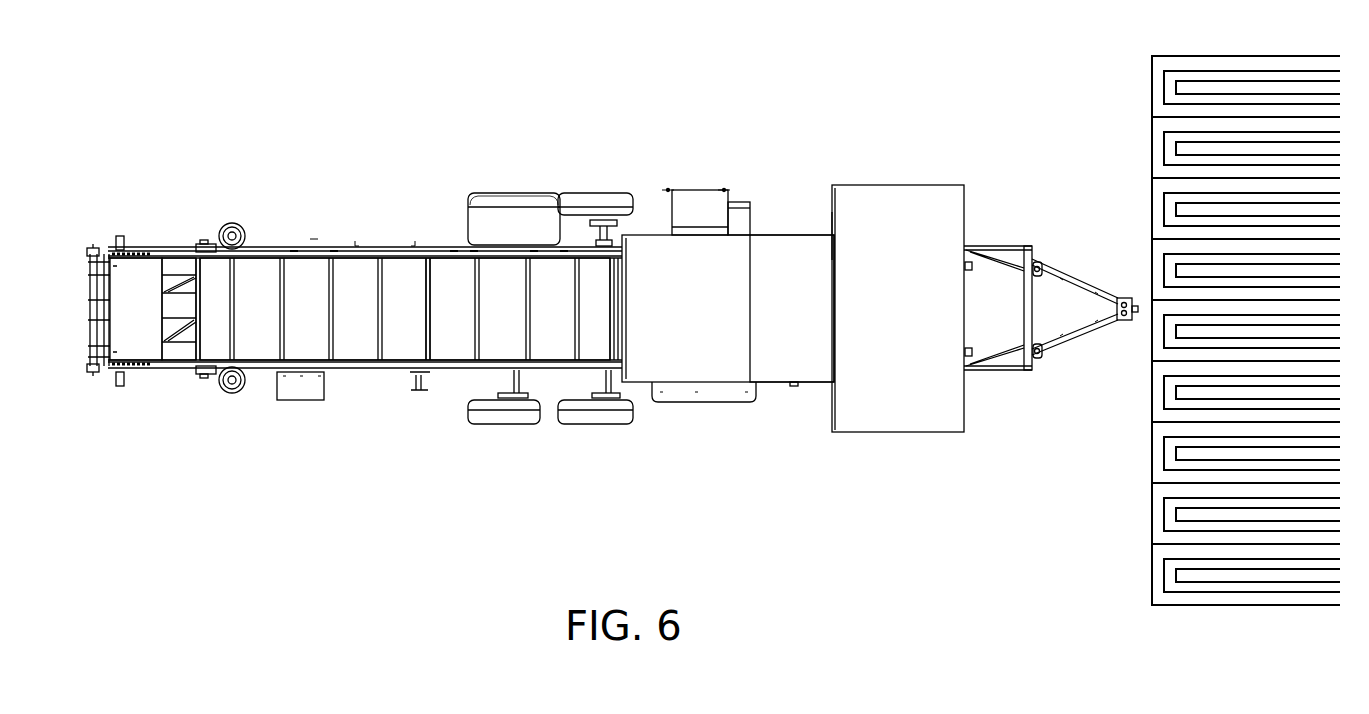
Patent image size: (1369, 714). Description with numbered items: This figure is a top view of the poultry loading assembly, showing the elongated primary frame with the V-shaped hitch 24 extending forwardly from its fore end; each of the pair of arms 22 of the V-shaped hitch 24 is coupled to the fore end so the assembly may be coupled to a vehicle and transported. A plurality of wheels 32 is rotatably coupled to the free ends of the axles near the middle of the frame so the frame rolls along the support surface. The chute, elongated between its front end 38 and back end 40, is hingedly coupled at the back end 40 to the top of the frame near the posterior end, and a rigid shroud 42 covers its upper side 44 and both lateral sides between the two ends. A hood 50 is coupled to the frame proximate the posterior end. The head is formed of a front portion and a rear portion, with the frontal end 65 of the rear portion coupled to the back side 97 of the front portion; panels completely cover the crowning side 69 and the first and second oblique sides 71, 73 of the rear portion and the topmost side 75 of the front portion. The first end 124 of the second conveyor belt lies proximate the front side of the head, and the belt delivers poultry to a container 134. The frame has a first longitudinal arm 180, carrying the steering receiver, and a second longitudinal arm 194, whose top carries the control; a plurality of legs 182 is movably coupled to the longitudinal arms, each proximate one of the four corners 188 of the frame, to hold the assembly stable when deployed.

The arm 22 is at (1078, 332).
The V-shaped hitch 24 is at (1121, 328).
The wheel 32 is at (590, 193).
The front end 38 is at (622, 272).
The back end 40 is at (198, 272).
The shroud 42 is at (344, 302).
The upper side 44 is at (418, 272).
The hood 50 is at (100, 246).
The frontal end 65 is at (834, 256).
The crowning side 69 is at (736, 262).
The first oblique side 71 is at (697, 233).
The second oblique side 73 is at (695, 383).
The topmost side 75 is at (918, 203).
The back side 97 is at (832, 212).
The first end 124 is at (968, 290).
The container 134 is at (1152, 72).
The first one of the pair of longitudinal arms 180 is at (312, 250).
The leg 182 is at (233, 234).
The corner 188 is at (110, 250).
The second one of the pair of longitudinal arms 194 is at (360, 372).